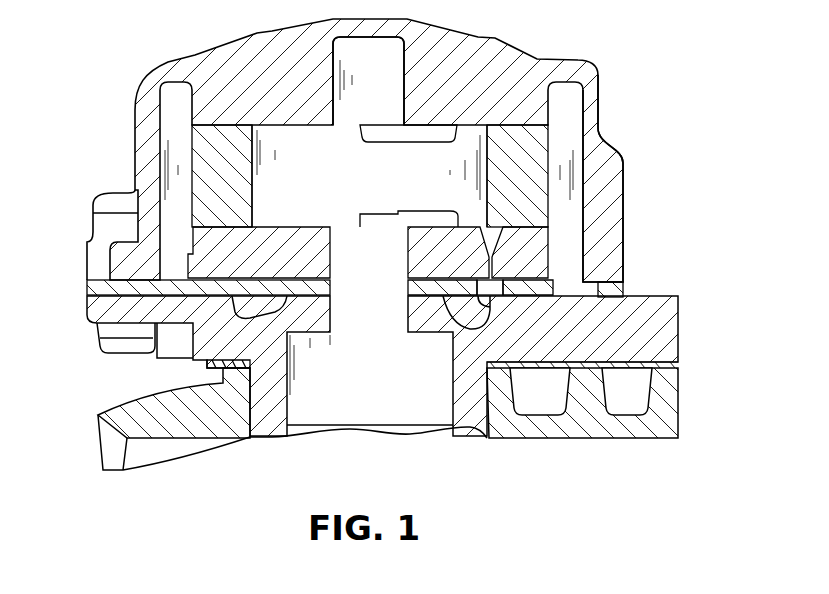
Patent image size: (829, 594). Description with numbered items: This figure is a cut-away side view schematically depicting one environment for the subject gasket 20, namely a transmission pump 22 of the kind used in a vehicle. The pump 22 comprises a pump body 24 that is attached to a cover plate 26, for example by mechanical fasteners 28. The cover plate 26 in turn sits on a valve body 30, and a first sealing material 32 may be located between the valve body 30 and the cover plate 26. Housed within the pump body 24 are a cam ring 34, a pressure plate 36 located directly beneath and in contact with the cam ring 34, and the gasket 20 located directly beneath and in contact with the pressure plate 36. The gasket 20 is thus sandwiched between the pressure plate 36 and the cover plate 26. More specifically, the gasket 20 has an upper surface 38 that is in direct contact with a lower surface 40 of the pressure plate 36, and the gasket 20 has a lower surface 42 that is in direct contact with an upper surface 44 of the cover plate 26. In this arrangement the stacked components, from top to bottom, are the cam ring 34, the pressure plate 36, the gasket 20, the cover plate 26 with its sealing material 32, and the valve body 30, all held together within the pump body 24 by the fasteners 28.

The gasket 20 is at (553, 282).
The transmission pump 22 is at (600, 128).
The pump body 24 is at (608, 175).
The cover plate 26 is at (662, 328).
The mechanical fasteners 28 is at (98, 347).
The valve body 30 is at (665, 402).
The first sealing material 32 is at (625, 290).
The cam ring 34 is at (442, 152).
The pressure plate 36 is at (530, 250).
The upper surface 38 is at (435, 277).
The lower surface 40 is at (297, 278).
The lower surface 42 is at (528, 297).
The upper surface 44 is at (212, 297).